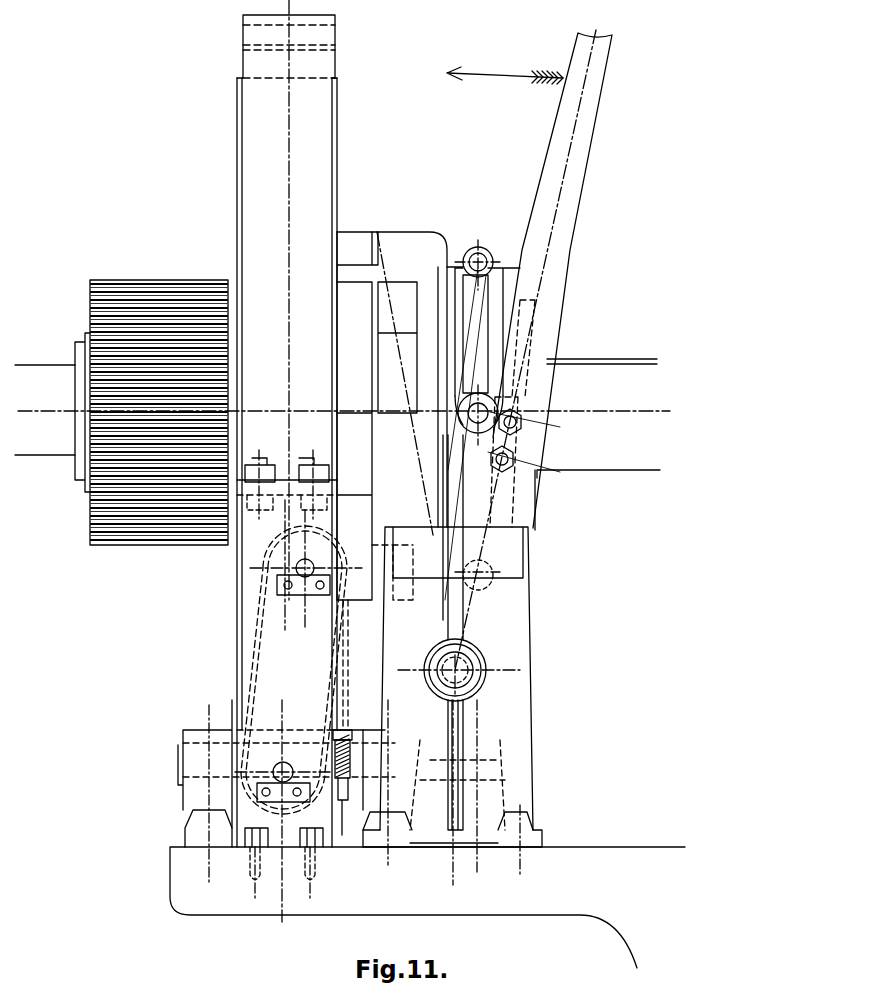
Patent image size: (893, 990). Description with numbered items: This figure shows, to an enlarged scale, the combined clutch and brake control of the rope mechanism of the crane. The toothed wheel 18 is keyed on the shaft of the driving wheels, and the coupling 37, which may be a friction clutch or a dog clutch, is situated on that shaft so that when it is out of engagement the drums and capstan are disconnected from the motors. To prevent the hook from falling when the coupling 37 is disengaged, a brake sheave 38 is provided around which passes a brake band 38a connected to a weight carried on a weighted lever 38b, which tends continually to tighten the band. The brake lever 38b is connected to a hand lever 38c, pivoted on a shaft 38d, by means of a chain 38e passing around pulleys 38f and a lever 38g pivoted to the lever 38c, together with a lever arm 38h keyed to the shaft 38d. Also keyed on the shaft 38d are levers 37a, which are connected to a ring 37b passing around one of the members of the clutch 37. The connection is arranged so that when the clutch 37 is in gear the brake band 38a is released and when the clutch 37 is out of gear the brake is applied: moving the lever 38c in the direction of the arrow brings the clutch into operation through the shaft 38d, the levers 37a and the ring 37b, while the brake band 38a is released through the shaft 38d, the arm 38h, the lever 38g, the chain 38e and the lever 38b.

The toothed wheel 18 is at (160, 282).
The coupling 37 is at (388, 240).
The levers 37a is at (512, 458).
The ring 37b is at (478, 247).
The brake sheave 38 is at (339, 128).
The brake band 38a is at (336, 57).
The weighted brake lever 38b is at (345, 740).
The lever 38c is at (567, 235).
The shaft 38d is at (470, 655).
The chain 38e is at (250, 635).
The pulleys 38f is at (245, 728).
The lever 38g is at (470, 790).
The lever arm 38h is at (440, 738).